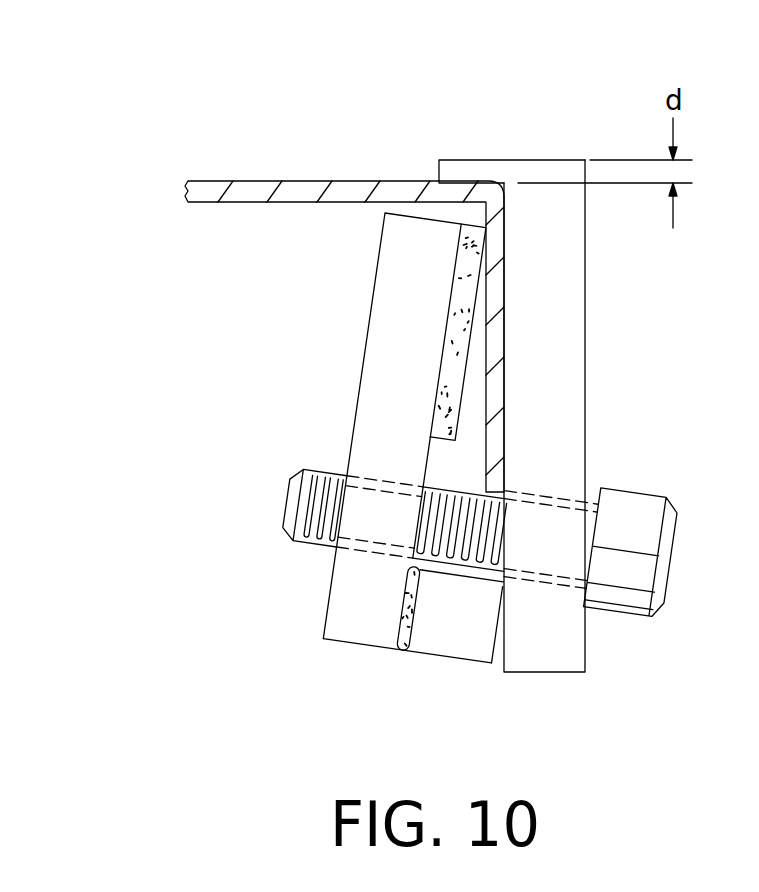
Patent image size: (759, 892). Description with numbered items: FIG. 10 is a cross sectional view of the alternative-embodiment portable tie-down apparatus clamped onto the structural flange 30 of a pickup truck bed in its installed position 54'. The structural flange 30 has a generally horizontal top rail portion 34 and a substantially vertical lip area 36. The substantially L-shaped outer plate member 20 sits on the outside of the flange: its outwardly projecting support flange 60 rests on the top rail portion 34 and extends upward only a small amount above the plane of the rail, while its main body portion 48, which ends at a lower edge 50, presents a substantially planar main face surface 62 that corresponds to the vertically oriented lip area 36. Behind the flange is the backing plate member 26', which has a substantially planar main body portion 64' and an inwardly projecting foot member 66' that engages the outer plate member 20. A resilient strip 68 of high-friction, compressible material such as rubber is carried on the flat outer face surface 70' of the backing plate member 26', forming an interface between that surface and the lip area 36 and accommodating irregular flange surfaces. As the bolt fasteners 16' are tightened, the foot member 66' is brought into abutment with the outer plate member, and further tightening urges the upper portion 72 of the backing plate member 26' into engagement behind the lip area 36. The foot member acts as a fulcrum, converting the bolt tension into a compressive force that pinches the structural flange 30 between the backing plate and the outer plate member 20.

The structural flange 30 is at (384, 130).
The top rail portion 34 is at (241, 190).
The lip area 36 is at (500, 275).
The support flange 60 is at (477, 170).
The outer plate member 20 is at (562, 288).
The main face surface 62 is at (508, 345).
The main body portion 48 is at (556, 384).
The upper portion of the backing plate member 72 is at (330, 290).
The backing plate member 26' is at (332, 433).
The resilient strip 68 is at (437, 412).
The main body portion of the backing plate member 64' is at (335, 538).
The flat outer face surface 70' is at (569, 447).
The foot member 66' is at (433, 649).
The bolt fasteners 16' is at (508, 530).
The lower edge 50 is at (656, 660).
The installed position 54' is at (545, 747).